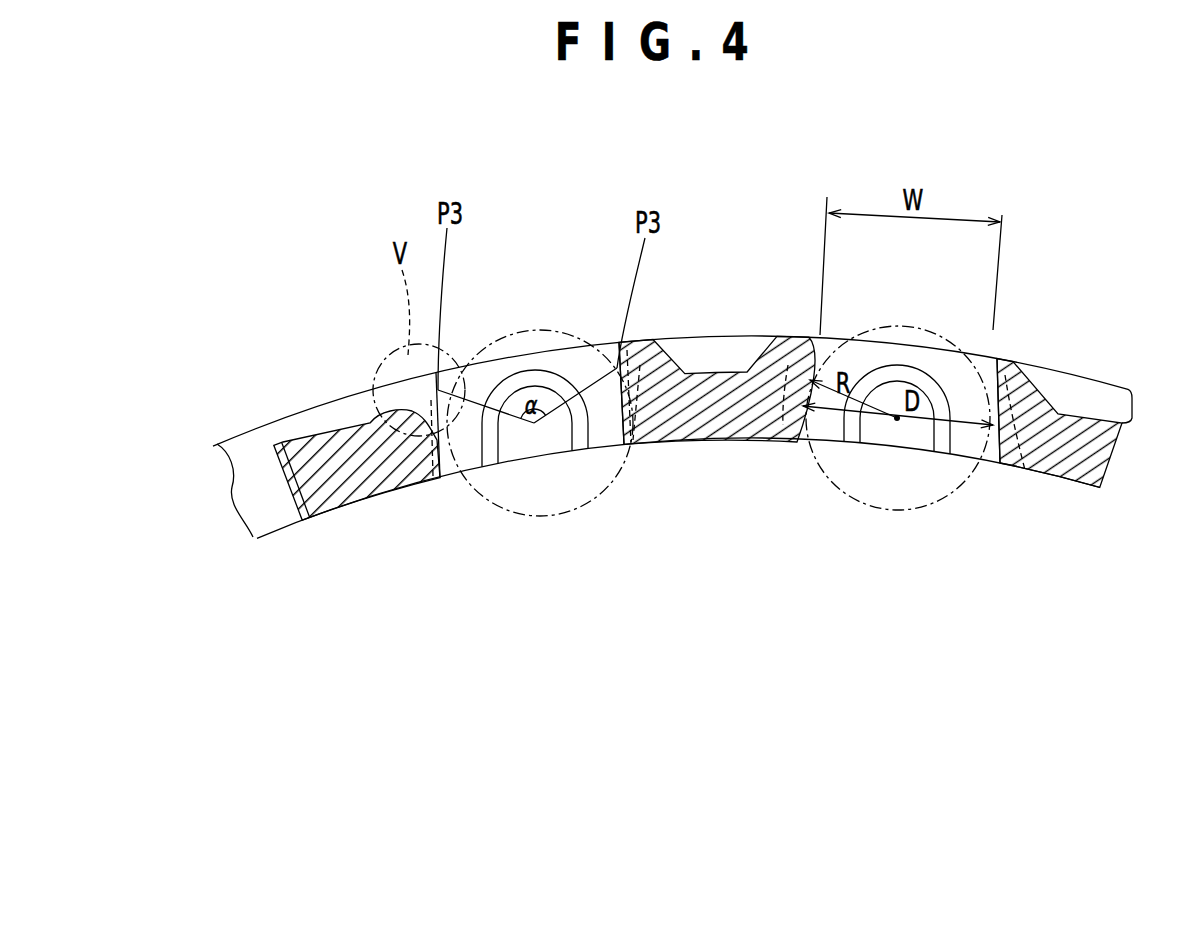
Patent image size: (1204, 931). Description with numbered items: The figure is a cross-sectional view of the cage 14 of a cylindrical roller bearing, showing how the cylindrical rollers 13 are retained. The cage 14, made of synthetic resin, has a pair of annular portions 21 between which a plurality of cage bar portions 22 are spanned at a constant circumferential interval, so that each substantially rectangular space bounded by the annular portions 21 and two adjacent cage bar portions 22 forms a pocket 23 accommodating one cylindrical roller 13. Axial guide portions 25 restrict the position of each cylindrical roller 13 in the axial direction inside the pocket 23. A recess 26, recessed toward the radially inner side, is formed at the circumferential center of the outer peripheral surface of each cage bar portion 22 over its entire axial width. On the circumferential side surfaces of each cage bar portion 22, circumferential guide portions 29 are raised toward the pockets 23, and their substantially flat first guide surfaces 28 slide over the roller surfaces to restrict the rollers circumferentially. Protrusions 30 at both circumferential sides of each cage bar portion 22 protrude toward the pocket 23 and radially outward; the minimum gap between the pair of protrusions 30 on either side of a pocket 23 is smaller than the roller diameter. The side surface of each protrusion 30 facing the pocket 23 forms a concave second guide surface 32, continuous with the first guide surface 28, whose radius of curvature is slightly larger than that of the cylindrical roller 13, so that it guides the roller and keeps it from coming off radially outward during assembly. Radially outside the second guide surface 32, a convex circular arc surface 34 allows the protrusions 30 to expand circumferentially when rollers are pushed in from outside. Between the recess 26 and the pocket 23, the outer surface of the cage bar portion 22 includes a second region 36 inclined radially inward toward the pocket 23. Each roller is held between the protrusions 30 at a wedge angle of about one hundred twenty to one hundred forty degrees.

The cylindrical roller 13 is at (540, 515).
The cage 14 is at (1118, 374).
The annular portion 21 is at (230, 437).
The cage bar portion 22 is at (356, 480).
The pocket 23 is at (547, 432).
The axial guide portion 25 is at (528, 432).
The recess 26 is at (347, 437).
The first guide surface 28 is at (250, 532).
The circumferential guide portion 29 is at (286, 522).
The protrusion 30 is at (265, 425).
The second guide surface 32 is at (265, 462).
The circular arc surface 34 is at (440, 388).
The second region of outer peripheral surface 36 is at (300, 515).